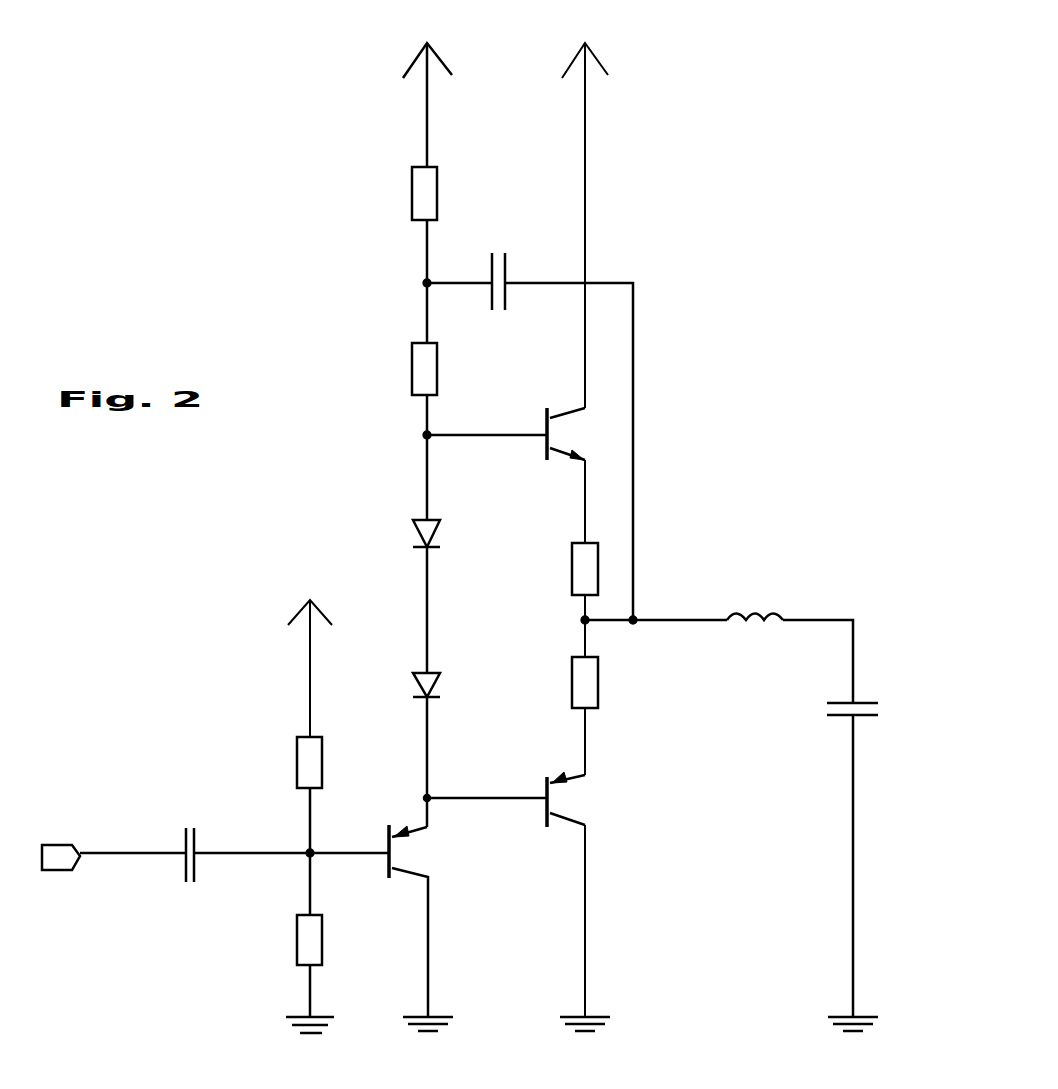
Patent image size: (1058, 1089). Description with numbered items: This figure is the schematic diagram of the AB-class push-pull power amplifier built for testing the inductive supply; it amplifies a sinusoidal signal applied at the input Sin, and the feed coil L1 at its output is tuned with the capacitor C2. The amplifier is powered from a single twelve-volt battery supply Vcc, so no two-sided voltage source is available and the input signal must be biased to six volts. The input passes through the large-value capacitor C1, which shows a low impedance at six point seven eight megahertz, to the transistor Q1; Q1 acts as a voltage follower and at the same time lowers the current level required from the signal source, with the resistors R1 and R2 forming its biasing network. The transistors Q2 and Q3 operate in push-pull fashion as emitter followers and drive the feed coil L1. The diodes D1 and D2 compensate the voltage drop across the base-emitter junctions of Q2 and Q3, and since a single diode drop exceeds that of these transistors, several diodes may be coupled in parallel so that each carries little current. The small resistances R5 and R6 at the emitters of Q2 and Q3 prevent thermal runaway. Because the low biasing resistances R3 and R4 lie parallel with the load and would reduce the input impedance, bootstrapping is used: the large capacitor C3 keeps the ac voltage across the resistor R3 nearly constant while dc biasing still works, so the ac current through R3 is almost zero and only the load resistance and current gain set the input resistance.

The supply voltage Vcc is at (480, 388).
The resistor R1 is at (297, 796).
The resistor R2 is at (303, 945).
The resistor R3 is at (412, 399).
The resistor R4 is at (412, 225).
The small resistance R5 is at (571, 571).
The small resistance R6 is at (571, 688).
The capacitor C1 is at (234, 851).
The capacitor C2 is at (845, 839).
The large capacitor C3 is at (532, 424).
The diode D1 is at (414, 714).
The diode D2 is at (414, 562).
The transistor Q1 is at (420, 900).
The transistor Q2 is at (506, 447).
The transistor Q3 is at (517, 873).
The feed coil L1 is at (719, 644).
The signal input terminal Sin is at (67, 845).